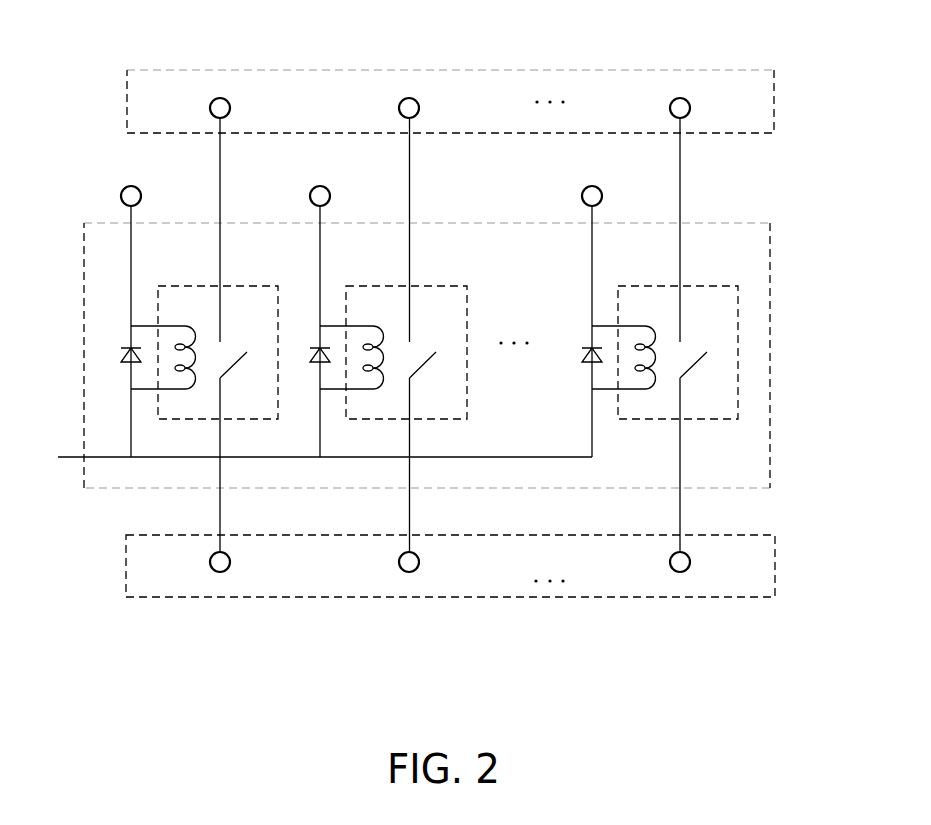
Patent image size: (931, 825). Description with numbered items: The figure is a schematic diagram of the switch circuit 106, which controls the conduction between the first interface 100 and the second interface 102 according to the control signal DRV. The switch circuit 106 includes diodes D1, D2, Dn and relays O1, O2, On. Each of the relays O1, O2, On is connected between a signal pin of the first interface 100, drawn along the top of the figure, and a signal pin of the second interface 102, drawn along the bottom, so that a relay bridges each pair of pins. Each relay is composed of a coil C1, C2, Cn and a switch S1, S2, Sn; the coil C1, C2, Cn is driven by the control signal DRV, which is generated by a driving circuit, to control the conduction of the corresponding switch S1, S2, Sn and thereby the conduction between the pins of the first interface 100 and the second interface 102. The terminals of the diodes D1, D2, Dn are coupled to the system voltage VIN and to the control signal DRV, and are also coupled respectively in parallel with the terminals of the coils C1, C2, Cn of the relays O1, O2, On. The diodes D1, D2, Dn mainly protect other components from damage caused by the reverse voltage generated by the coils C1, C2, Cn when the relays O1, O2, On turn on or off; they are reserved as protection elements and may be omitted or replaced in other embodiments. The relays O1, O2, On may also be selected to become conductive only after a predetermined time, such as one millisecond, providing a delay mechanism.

The first interface 100 is at (774, 100).
The second interface 102 is at (775, 566).
The switch circuit 106 is at (770, 268).
The system voltage VIN is at (359, 308).
The control signal DRV is at (309, 443).
The relay O1 is at (240, 286).
The relay O2 is at (428, 286).
The relay On is at (700, 286).
The coil C1 is at (163, 344).
The coil C2 is at (352, 344).
The coil Cn is at (624, 344).
The switch S1 is at (241, 436).
The switch S2 is at (431, 436).
The switch Sn is at (701, 436).
The diode D1 is at (120, 367).
The diode D2 is at (309, 367).
The diode Dn is at (580, 367).